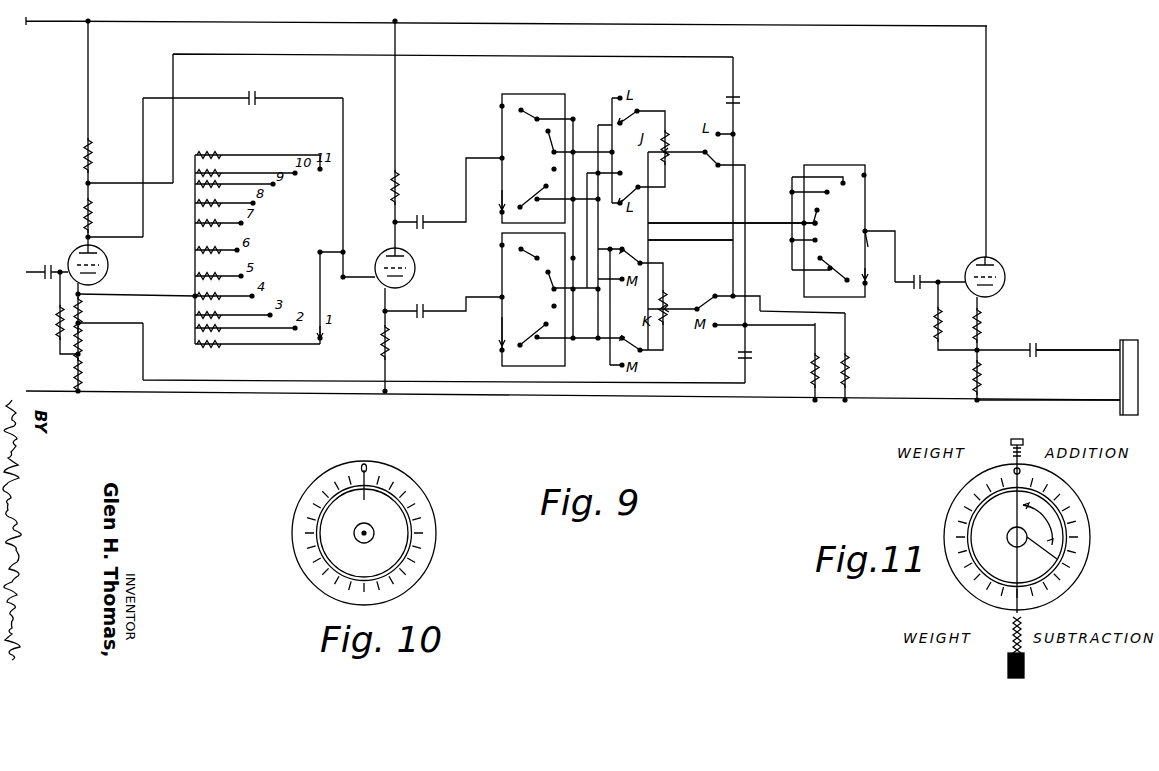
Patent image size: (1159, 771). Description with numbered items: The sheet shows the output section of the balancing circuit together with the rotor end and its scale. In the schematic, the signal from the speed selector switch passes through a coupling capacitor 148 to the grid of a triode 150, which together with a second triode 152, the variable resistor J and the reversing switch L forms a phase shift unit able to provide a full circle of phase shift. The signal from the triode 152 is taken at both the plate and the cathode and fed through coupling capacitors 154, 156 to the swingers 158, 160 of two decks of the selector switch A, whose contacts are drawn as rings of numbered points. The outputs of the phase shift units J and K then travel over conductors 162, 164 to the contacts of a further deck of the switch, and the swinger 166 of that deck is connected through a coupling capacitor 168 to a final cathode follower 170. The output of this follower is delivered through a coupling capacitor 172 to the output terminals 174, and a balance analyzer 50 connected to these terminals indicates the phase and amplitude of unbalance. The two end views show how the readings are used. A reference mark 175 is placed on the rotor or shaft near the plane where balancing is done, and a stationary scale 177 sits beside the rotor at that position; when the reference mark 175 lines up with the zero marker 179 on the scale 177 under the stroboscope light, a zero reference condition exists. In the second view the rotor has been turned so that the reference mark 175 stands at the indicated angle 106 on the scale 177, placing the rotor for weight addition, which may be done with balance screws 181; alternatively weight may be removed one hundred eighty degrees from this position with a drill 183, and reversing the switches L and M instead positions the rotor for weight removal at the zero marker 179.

In FIG. 9, the coupling capacitor 148 is at (43, 264).
In FIG. 9, the triode 150 is at (108, 258).
In FIG. 9, the triode 152 is at (380, 254).
In FIG. 9, the coupling capacitor 154 is at (425, 210).
In FIG. 9, the coupling capacitor 156 is at (427, 300).
In FIG. 9, the swinger 158 is at (502, 187).
In FIG. 9, the swinger 160 is at (500, 317).
In FIG. 9, the conductor 162 is at (765, 222).
In FIG. 9, the conductor 164 is at (776, 228).
In FIG. 9, the swinger 166 is at (870, 245).
In FIG. 9, the coupling capacitor 168 is at (920, 272).
In FIG. 9, the final cathode follower 170 is at (998, 266).
In FIG. 9, the coupling capacitor 172 is at (1036, 344).
In FIG. 9, the output terminals 174 is at (1078, 354).
In FIG. 9, the balance analyzer 50 is at (1122, 343).
In FIG. 10, the reference mark 175 is at (338, 488).
In FIG. 11, the reference mark 175 is at (1050, 553).
In FIG. 10, the scale 177 is at (305, 572).
In FIG. 11, the scale 177 is at (945, 518).
In FIG. 10, the zero marker 179 is at (367, 481).
In FIG. 11, the zero marker 179 is at (1019, 485).
In FIG. 11, the angle 106 is at (1038, 531).
In FIG. 11, the balance screws 181 is at (1012, 440).
In FIG. 11, the drill 183 is at (1012, 622).